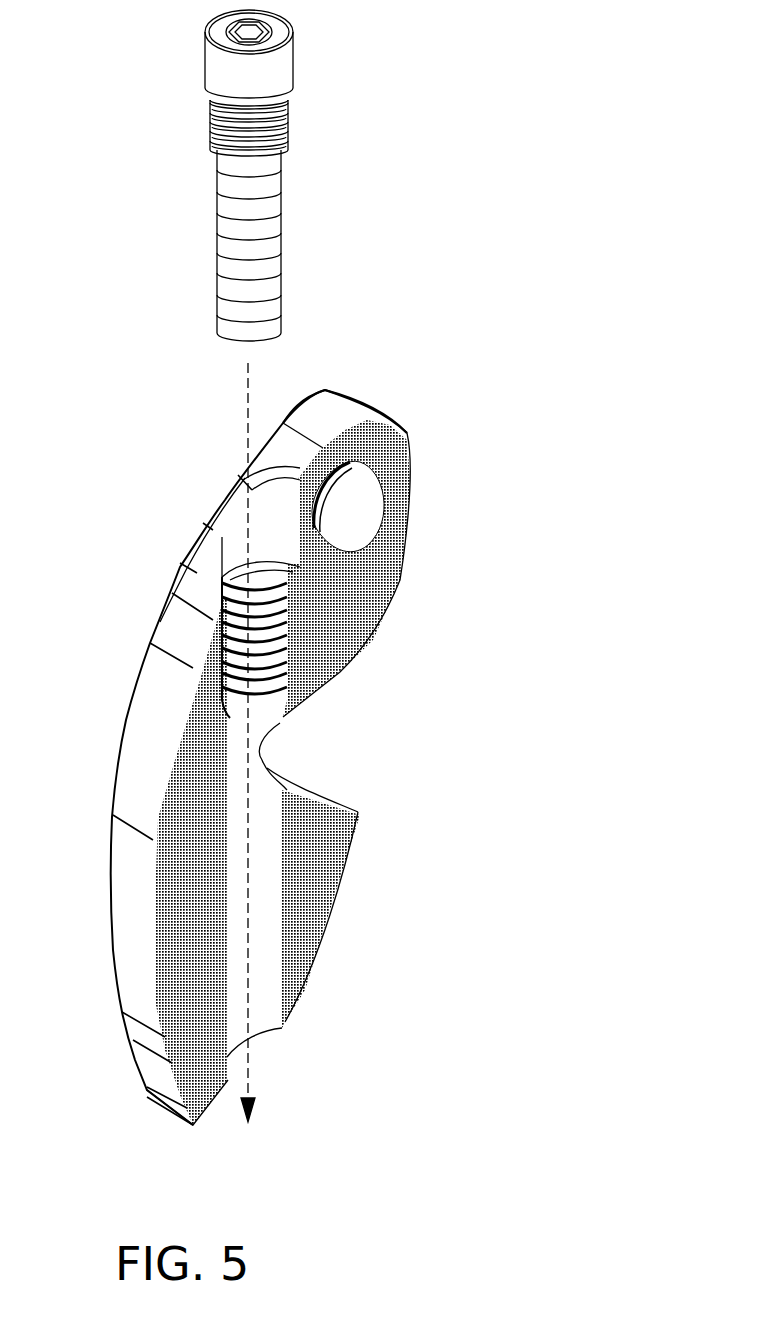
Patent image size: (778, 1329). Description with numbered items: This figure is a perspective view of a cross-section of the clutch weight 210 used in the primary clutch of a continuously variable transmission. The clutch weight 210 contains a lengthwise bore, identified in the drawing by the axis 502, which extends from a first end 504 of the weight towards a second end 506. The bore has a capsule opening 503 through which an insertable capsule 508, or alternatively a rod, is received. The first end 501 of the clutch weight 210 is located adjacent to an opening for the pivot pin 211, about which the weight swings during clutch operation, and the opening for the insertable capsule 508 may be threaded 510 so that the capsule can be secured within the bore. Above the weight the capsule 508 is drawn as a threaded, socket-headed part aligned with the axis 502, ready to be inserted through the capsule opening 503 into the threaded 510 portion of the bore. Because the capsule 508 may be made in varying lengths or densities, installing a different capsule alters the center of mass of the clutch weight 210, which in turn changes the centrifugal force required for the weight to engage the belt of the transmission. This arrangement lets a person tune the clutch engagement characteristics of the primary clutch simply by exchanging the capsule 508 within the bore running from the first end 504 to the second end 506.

The insertable capsule 508 is at (292, 68).
The axis 502 is at (250, 410).
The first end 501 is at (337, 412).
The first end 504 is at (225, 482).
The capsule opening 503 is at (237, 550).
The pivot pin 211 is at (338, 515).
The clutch weight 210 is at (395, 563).
The threaded 510 is at (280, 650).
The second end 506 is at (288, 1015).